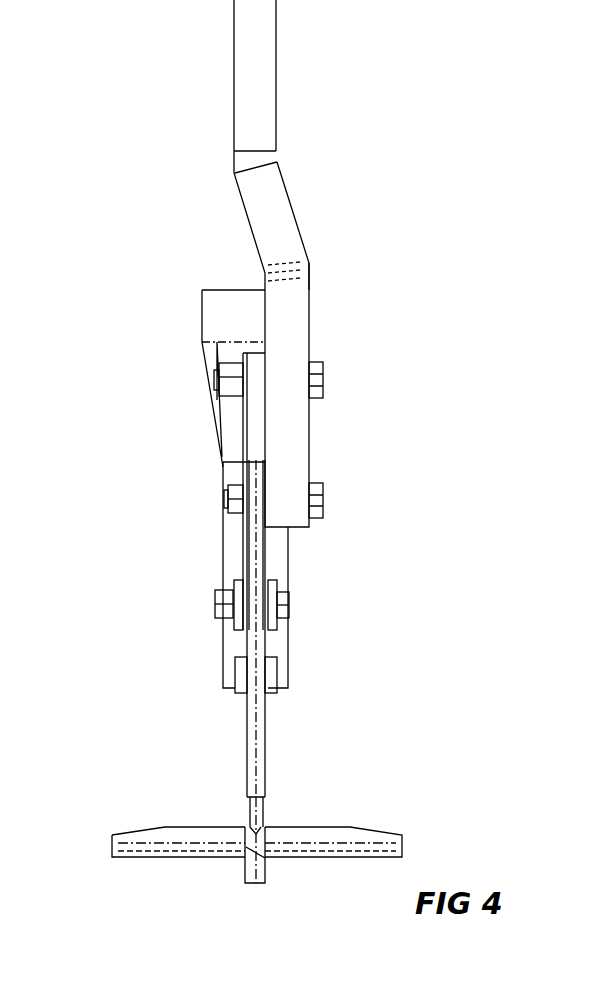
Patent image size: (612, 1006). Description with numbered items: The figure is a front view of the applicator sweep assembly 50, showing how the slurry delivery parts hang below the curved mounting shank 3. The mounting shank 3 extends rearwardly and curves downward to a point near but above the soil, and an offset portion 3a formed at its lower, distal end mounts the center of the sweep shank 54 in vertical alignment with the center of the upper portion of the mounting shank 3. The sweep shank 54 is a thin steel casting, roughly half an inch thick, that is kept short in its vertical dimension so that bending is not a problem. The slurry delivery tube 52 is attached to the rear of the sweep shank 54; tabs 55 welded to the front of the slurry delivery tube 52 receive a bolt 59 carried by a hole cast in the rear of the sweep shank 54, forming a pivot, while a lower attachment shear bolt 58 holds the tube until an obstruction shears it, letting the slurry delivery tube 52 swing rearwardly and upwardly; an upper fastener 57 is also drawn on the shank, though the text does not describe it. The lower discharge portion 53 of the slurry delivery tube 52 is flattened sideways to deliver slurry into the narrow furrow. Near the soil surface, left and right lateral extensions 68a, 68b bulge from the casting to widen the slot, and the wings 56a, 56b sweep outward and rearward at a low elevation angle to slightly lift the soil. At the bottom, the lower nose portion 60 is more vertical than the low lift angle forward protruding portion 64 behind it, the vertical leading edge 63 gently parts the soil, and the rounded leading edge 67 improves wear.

The mounting shank 3 is at (253, 83).
The offset portion 3a is at (288, 432).
The applicator sweep assembly 50 is at (255, 560).
The slurry delivery tube 52 is at (220, 282).
The lower discharge portion 53 is at (222, 545).
The sweep shank 54 is at (242, 432).
The tabs 55 is at (388, 673).
The wing 56a is at (385, 845).
The wing 56b is at (133, 845).
The bolt 57 is at (325, 373).
The lower attachment shear bolt 58 is at (320, 498).
The bolt 59 is at (290, 605).
The lower nose portion 60 is at (248, 877).
The leading edge 63 is at (265, 725).
The forward protruding portion 64 is at (265, 857).
The leading edge 67 is at (252, 813).
The lateral extension 68a is at (225, 688).
The lateral extension 68b is at (287, 682).